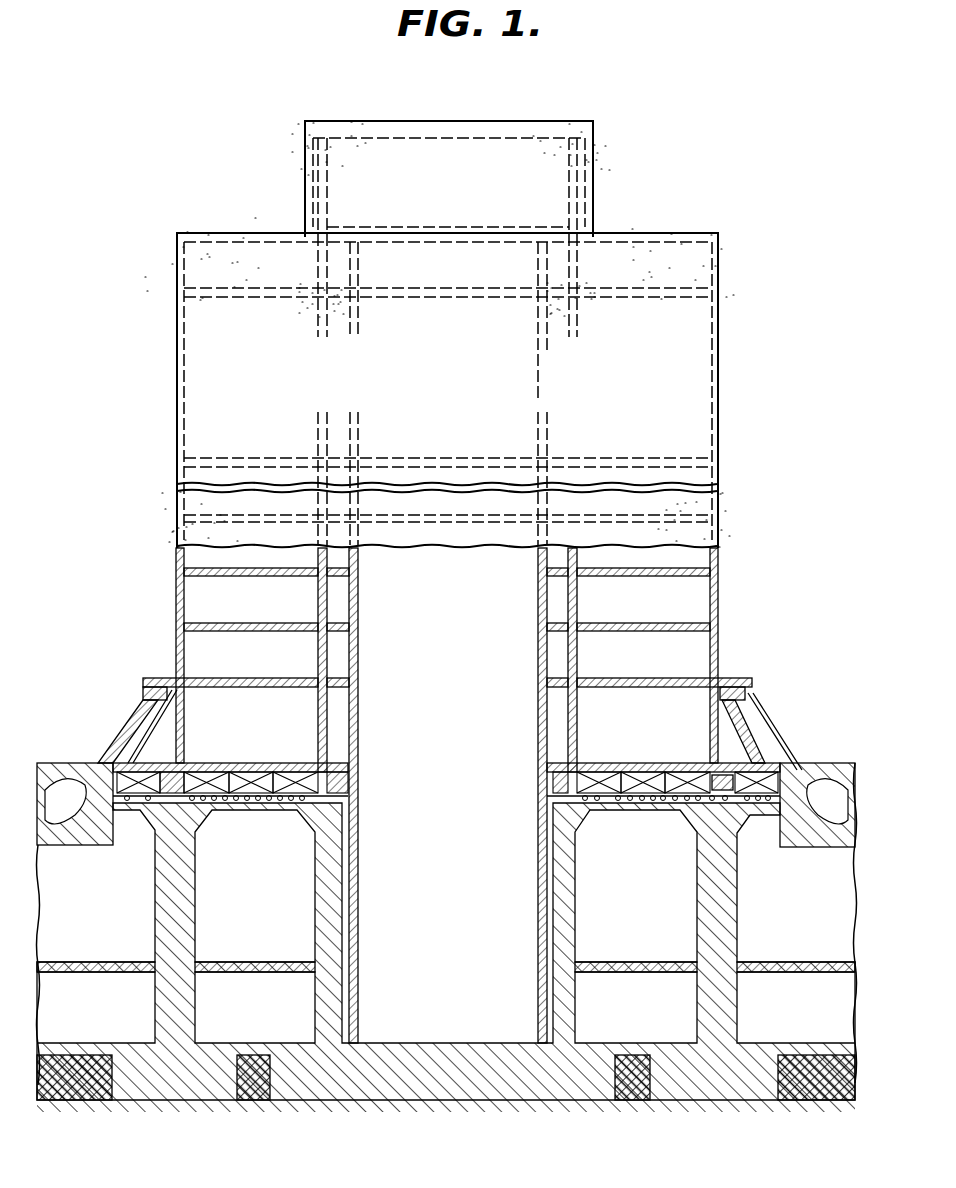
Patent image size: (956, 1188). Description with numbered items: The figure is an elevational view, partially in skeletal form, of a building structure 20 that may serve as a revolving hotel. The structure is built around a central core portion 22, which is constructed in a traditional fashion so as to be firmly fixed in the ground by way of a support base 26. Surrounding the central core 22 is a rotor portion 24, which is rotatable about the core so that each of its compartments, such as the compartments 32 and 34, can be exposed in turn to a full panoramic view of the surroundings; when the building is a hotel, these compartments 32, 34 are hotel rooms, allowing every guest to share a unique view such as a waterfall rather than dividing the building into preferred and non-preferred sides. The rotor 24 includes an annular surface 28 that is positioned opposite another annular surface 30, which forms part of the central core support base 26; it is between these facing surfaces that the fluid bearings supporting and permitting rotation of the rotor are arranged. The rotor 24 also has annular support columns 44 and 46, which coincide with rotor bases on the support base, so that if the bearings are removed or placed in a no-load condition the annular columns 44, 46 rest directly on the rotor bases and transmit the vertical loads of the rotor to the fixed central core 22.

The building structure 20 is at (467, 795).
The central core portion 22 is at (537, 655).
The rotor portion 24 is at (713, 592).
The support base 26 is at (563, 815).
The annular surface 28 is at (637, 795).
The annular surface 30 is at (608, 797).
The compartment 32 is at (205, 600).
The compartment 34 is at (205, 655).
The annular support column 44 is at (550, 800).
The annular support column 46 is at (707, 790).